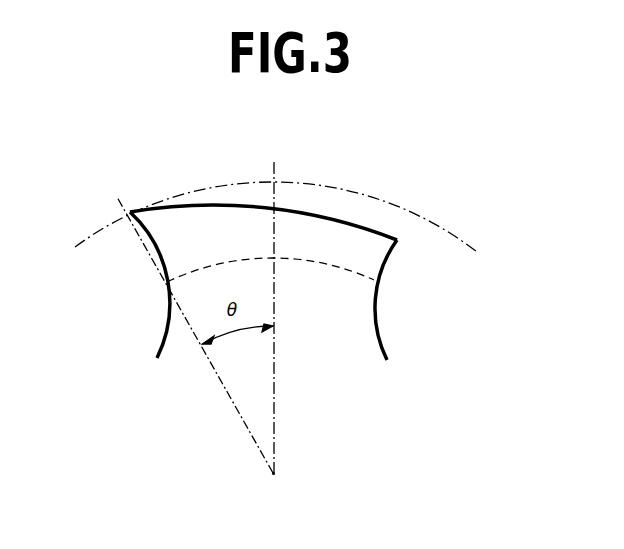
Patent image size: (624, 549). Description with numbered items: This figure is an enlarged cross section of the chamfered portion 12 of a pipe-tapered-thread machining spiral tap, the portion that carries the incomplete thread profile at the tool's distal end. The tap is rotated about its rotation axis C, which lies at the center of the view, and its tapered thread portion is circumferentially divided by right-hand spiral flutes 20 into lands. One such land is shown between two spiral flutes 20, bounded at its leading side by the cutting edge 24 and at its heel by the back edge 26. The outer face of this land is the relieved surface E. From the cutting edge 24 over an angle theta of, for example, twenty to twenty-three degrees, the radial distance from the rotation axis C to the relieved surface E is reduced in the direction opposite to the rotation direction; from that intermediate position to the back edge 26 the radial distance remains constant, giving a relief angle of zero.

The chamfered portion 12 is at (482, 196).
The spiral flute 20 is at (256, 238).
The cutting edge 24 is at (131, 211).
The back edge 26 is at (400, 242).
The relieved surface E is at (212, 203).
The rotation axis C is at (275, 478).